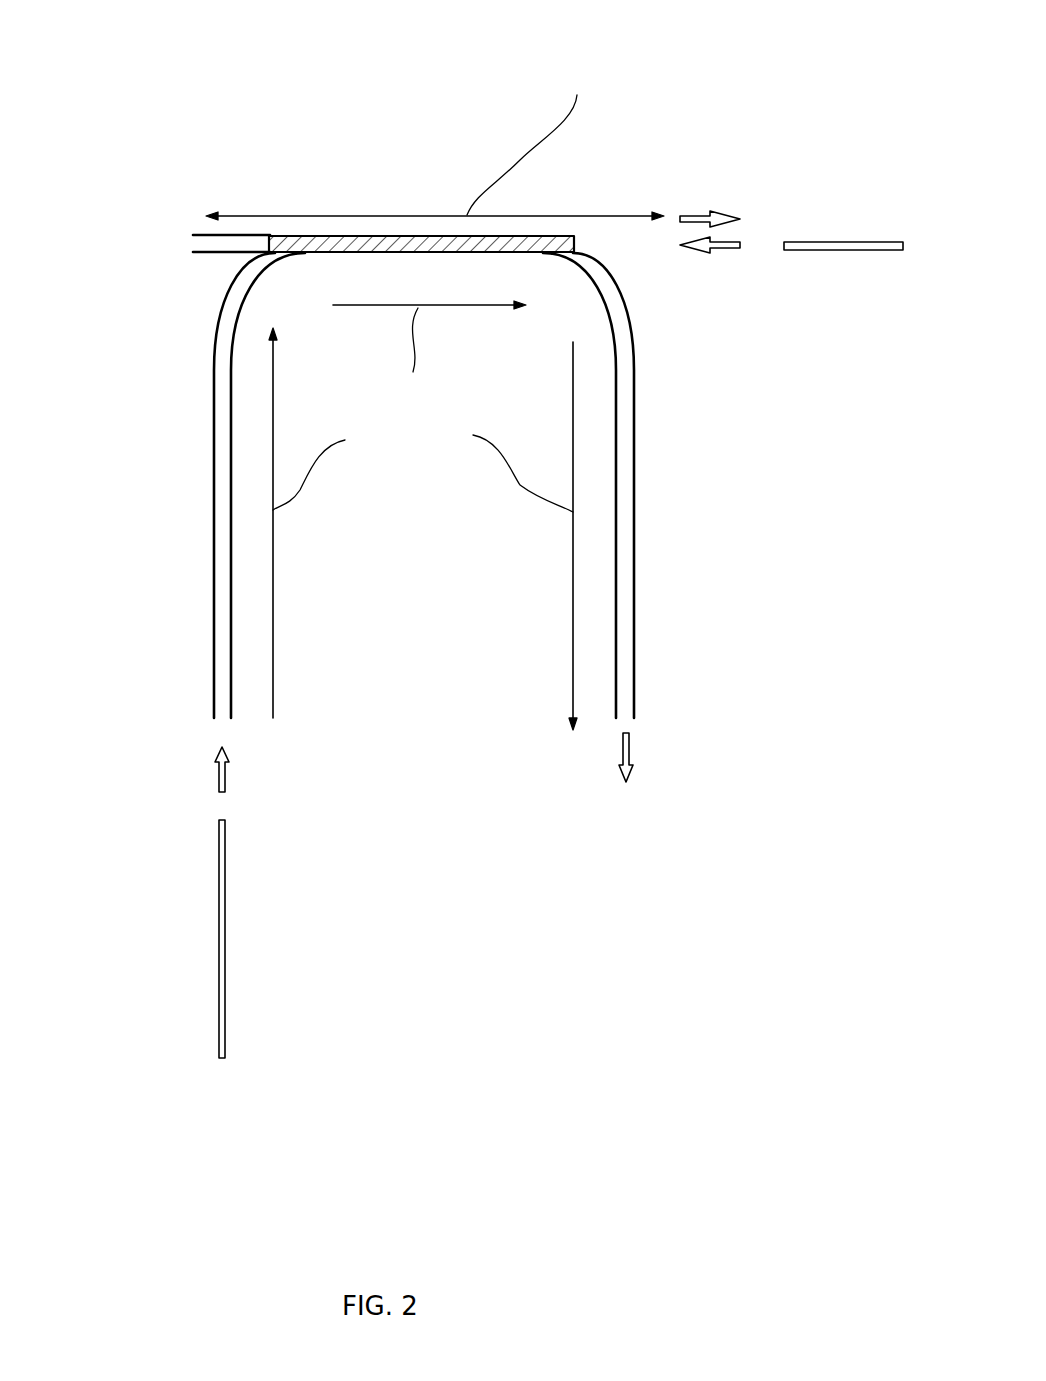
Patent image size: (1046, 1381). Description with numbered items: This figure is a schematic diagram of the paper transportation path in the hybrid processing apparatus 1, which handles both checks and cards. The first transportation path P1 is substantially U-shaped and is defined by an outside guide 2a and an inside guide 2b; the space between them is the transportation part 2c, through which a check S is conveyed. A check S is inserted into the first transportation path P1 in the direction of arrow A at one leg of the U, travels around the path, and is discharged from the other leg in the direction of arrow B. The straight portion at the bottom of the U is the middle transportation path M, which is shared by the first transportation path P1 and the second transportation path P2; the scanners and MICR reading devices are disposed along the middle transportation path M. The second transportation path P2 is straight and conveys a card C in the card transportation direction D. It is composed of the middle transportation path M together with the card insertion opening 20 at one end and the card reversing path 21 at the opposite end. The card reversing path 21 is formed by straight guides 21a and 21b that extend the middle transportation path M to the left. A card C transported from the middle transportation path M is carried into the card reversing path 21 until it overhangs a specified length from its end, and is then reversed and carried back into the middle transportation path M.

The hybrid processing apparatus 1 is at (425, 112).
The outside guide 2a is at (214, 538).
The inside guide 2b is at (231, 655).
The transportation part 2c is at (207, 607).
The first transportation path P1 is at (204, 452).
The second transportation path P2 is at (566, 226).
The card insertion opening 20 is at (596, 245).
The card reversing path 21 is at (188, 244).
The straight guide 21a is at (197, 234).
The straight guide 21b is at (205, 254).
The middle transportation path M is at (332, 232).
The card C is at (857, 242).
The card transportation direction D is at (697, 215).
The check S is at (225, 935).
The check insertion direction A is at (218, 780).
The check discharge direction B is at (630, 745).